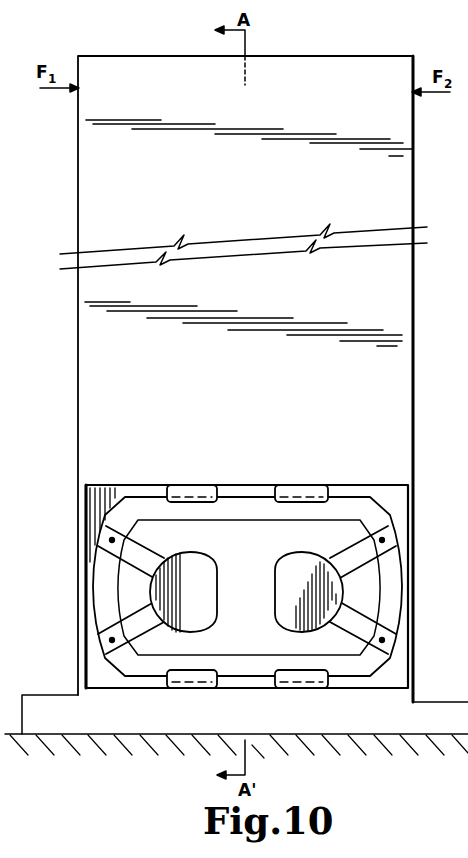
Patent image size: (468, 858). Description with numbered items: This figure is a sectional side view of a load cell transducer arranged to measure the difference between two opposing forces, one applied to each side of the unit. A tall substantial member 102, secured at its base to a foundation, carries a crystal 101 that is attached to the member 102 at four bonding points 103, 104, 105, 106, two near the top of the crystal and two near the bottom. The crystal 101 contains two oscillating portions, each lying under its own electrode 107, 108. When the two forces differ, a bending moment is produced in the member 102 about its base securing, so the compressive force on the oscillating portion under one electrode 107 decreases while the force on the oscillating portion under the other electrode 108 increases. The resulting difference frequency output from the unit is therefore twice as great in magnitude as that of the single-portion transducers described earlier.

The crystal 101 is at (380, 516).
The member 102 is at (413, 408).
The bonding point 103 is at (310, 503).
The bonding point 104 is at (207, 503).
The bonding point 105 is at (213, 670).
The bonding point 106 is at (310, 670).
The electrode 107 is at (218, 580).
The electrode 108 is at (275, 610).